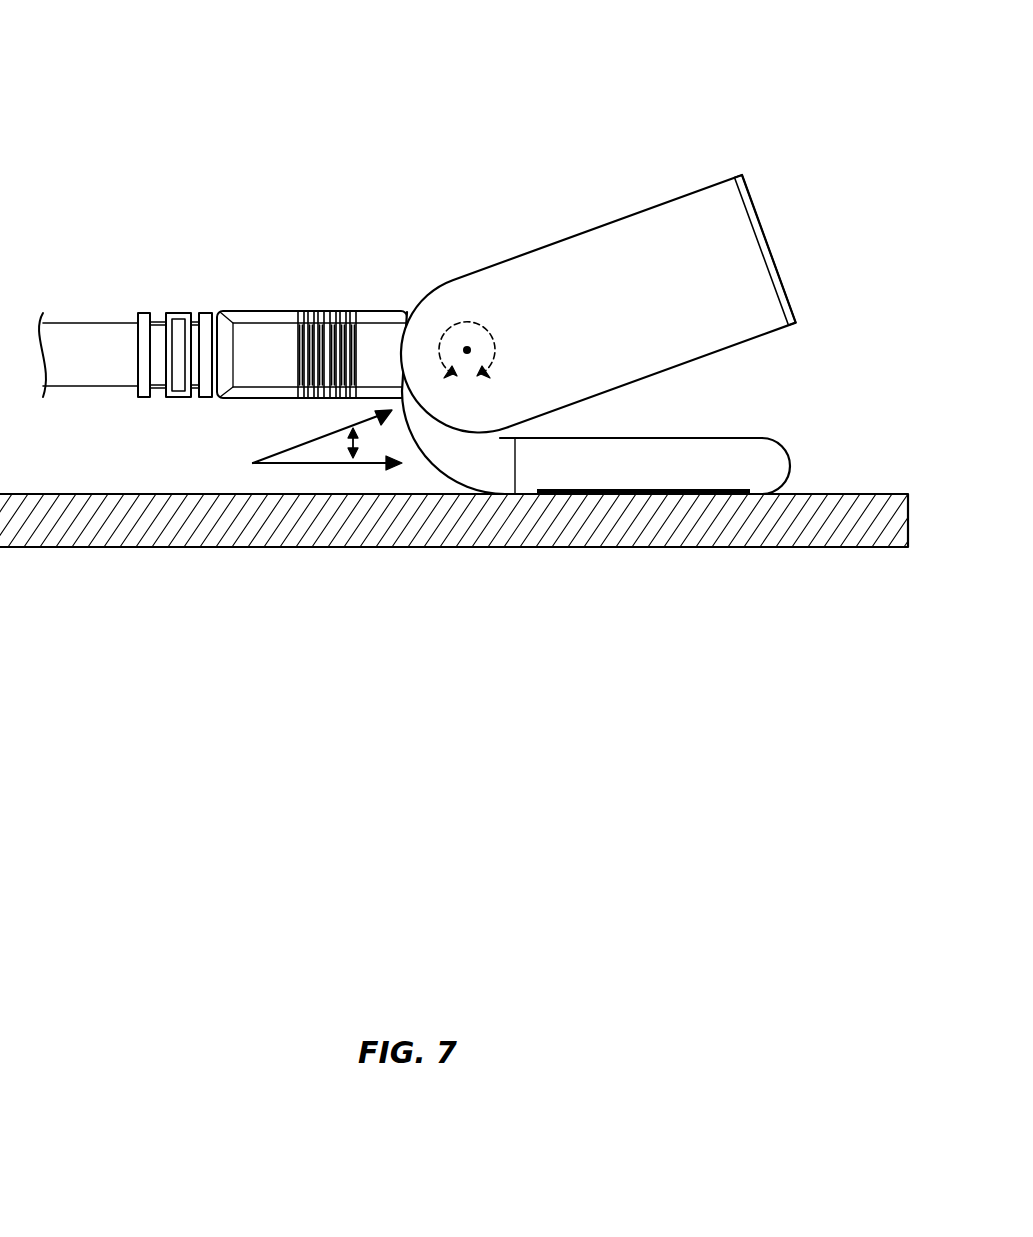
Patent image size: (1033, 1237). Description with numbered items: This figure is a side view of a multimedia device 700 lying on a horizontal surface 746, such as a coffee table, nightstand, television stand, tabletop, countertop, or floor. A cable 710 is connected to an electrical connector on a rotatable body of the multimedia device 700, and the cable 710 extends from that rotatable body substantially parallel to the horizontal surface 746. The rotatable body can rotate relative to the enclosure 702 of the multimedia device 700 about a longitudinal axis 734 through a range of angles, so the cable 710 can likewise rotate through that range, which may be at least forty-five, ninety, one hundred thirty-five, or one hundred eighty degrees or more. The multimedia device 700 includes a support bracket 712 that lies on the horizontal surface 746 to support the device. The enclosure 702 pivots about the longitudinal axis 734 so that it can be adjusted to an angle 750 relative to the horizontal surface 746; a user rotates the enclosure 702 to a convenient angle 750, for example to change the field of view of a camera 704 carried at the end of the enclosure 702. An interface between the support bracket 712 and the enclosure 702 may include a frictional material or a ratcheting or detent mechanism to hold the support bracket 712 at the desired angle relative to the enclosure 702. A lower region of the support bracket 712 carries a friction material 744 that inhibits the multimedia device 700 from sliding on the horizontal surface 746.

The multimedia device 700 is at (217, 84).
The enclosure 702 is at (548, 245).
The camera 704 is at (766, 240).
The cable 710 is at (271, 311).
The support bracket 712 is at (786, 447).
The longitudinal axis 734 is at (470, 351).
The friction material 744 is at (651, 494).
The horizontal surface 746 is at (362, 548).
The angle 750 is at (327, 440).